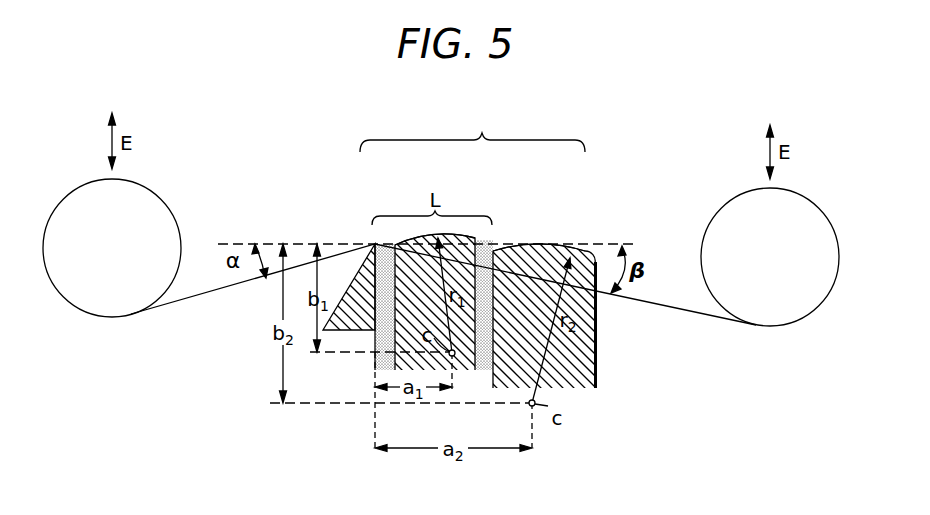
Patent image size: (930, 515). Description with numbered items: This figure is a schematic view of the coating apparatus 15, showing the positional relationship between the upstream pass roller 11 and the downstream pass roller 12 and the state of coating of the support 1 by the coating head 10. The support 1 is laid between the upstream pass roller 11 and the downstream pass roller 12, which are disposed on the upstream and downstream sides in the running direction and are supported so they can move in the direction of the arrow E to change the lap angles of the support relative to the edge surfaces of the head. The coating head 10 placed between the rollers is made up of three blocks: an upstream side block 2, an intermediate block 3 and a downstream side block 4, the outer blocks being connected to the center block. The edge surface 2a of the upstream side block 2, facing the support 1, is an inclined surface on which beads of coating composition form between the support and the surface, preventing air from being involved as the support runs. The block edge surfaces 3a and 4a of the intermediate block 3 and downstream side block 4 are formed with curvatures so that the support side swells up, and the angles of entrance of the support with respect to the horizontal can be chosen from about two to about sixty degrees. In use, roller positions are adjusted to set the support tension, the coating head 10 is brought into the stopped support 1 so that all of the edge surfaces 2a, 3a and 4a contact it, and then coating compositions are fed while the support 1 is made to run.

The support 1 is at (668, 302).
The upstream side block 2 is at (356, 280).
The edge surface 2a is at (379, 252).
The intermediate block 3 is at (455, 253).
The block edge surface 3a is at (416, 237).
The downstream side block 4 is at (567, 270).
The block edge surface 4a is at (538, 250).
The coating head 10 is at (472, 131).
The upstream pass roller 11 is at (100, 305).
The downstream pass roller 12 is at (805, 307).
The coating apparatus 15 is at (318, 162).